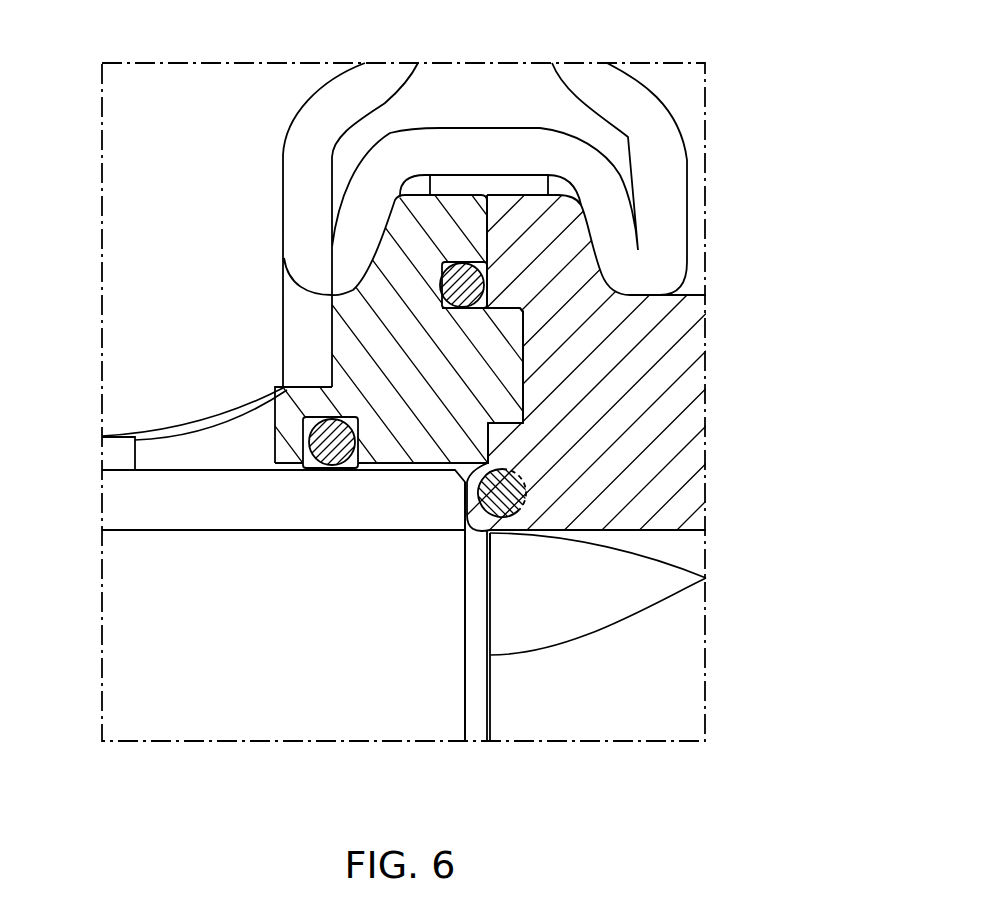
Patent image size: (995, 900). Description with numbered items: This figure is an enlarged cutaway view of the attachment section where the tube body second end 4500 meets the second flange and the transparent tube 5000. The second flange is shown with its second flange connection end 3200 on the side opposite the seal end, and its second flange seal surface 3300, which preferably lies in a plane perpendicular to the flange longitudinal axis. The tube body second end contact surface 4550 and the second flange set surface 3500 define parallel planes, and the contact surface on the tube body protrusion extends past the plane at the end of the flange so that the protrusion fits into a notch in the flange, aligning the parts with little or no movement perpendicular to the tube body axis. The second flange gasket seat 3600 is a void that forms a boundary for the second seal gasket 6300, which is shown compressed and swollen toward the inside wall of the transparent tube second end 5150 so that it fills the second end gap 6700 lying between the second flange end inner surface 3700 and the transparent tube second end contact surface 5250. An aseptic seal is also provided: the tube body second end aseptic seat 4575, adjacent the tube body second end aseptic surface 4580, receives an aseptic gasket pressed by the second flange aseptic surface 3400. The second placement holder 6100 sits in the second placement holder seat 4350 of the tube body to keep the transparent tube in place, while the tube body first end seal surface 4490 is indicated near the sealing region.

The second flange connection end 3200 is at (567, 395).
The second flange seal surface 3300 is at (567, 440).
The second flange aseptic surface 3400 is at (487, 240).
The second flange set surface 3500 is at (518, 362).
The second flange gasket seat 3600 is at (537, 493).
The second flange end inner surface 3700 is at (706, 578).
The second placement holder seat 4350 is at (283, 388).
The tube body first end seal surface 4490 is at (480, 437).
The tube body second end 4500 is at (407, 387).
The tube body second end contact surface 4550 is at (420, 270).
The tube body second end aseptic seat 4575 is at (450, 262).
The tube body second end aseptic surface 4580 is at (481, 219).
The transparent tube 5000 is at (148, 508).
The transparent tube second end 5150 is at (465, 683).
The transparent tube second end contact surface 5250 is at (463, 490).
The second placement holder 6100 is at (330, 450).
The second seal gasket 6300 is at (505, 487).
The second end gap 6700 is at (465, 545).